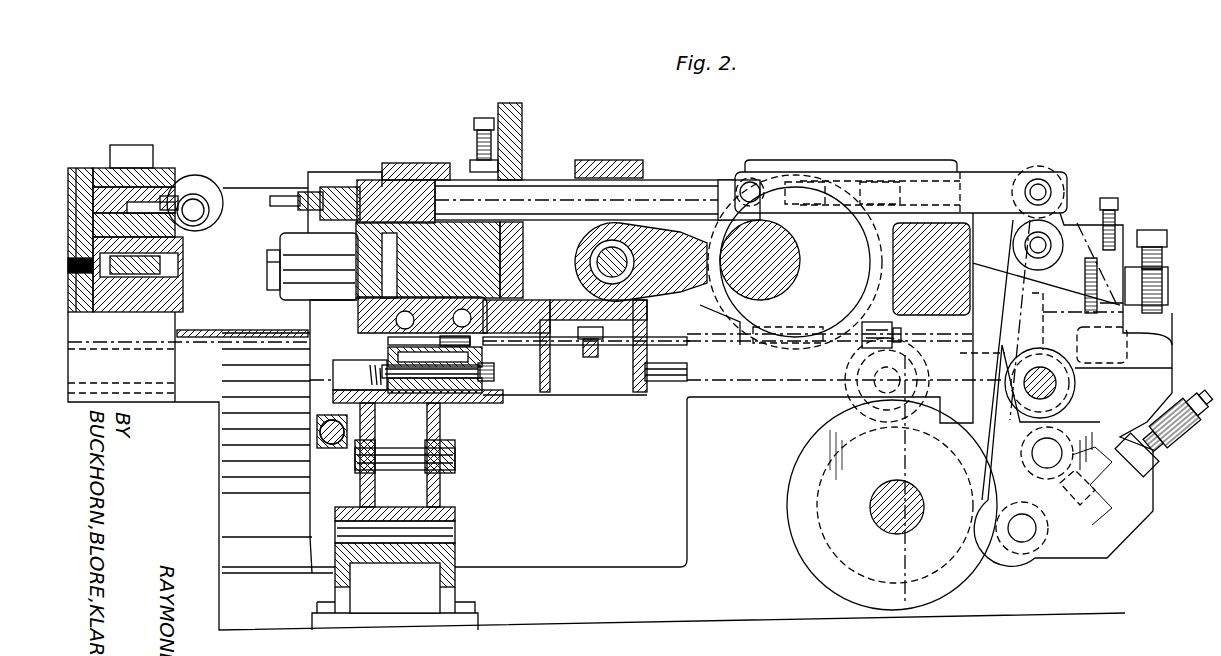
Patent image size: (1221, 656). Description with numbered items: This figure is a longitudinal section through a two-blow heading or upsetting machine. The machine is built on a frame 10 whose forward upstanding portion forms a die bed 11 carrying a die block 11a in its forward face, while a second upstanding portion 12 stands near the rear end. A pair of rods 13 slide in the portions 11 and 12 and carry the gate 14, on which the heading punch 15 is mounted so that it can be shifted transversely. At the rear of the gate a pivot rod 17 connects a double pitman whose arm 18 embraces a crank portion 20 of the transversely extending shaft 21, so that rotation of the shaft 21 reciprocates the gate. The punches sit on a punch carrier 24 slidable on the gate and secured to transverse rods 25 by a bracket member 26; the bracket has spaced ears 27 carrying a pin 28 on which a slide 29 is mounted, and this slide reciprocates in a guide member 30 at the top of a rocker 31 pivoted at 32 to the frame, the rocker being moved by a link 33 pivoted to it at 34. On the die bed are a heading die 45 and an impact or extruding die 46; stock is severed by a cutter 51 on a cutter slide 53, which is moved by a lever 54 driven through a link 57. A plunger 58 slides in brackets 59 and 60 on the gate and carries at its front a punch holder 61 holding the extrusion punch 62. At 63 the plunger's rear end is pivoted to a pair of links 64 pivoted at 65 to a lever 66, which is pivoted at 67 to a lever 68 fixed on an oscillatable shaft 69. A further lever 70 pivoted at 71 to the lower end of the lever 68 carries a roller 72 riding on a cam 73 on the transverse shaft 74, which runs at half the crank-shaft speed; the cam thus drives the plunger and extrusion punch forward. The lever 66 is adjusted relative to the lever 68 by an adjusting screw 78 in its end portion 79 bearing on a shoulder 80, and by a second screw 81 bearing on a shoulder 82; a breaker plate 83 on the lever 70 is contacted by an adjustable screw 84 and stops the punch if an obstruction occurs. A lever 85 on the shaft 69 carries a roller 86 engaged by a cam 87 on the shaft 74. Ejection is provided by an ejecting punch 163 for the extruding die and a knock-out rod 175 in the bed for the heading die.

The frame 10 is at (620, 584).
The die bed 11 is at (125, 253).
The die block 11a is at (137, 300).
The upstanding portion 12 is at (700, 453).
The rods 13 is at (667, 383).
The gate 14 is at (597, 306).
The heading punch 15 is at (270, 290).
The pivot rod 17 is at (612, 255).
The pitman arm 18 is at (708, 243).
The crank portion 20 is at (842, 283).
The shaft 21 is at (780, 285).
The punch carrier 24 is at (335, 278).
The transverse rods 25 is at (395, 320).
The bracket member 26 is at (378, 306).
The ears 27 is at (478, 398).
The pin 28 is at (395, 380).
The slide 29 is at (445, 393).
The guide member 30 is at (340, 385).
The rocker 31 is at (440, 430).
The rocker pivot 32 is at (342, 532).
The link 33 is at (455, 470).
The link pivot 34 is at (356, 456).
The heading die 45 is at (178, 272).
The impact or extruding die 46 is at (168, 195).
The cutter 51 is at (203, 220).
The cutter slide 53 is at (198, 200).
The lever 54 is at (305, 414).
The link 57 is at (345, 433).
The plunger 58 is at (544, 186).
The bracket 59 is at (420, 163).
The bracket 60 is at (610, 160).
The punch holder 61 is at (343, 187).
The extrusion punch 62 is at (288, 196).
The link pivot 63 is at (751, 181).
The links 64 is at (978, 172).
The pivot 65 is at (1042, 182).
The lever 66 is at (1070, 213).
The pivot 67 is at (1025, 245).
The lever 68 is at (1012, 313).
The shaft 69 is at (1042, 367).
The lever 70 is at (1138, 505).
The pivot 71 is at (1055, 442).
The roller 72 is at (1020, 556).
The cam 73 is at (940, 572).
The transverse shaft 74 is at (922, 511).
The adjusting screw 78 is at (1150, 230).
The end portion 79 is at (1168, 285).
The shoulder 80 is at (1178, 325).
The second screw 81 is at (1111, 198).
The shoulder 82 is at (1088, 247).
The breaker plate 83 is at (1130, 460).
The adjustable screw 84 is at (1197, 396).
The lever 85 is at (930, 355).
The roller 86 is at (850, 373).
The cam 87 is at (830, 458).
The ejecting punch 163 is at (85, 168).
The knock-out rod 175 is at (80, 305).